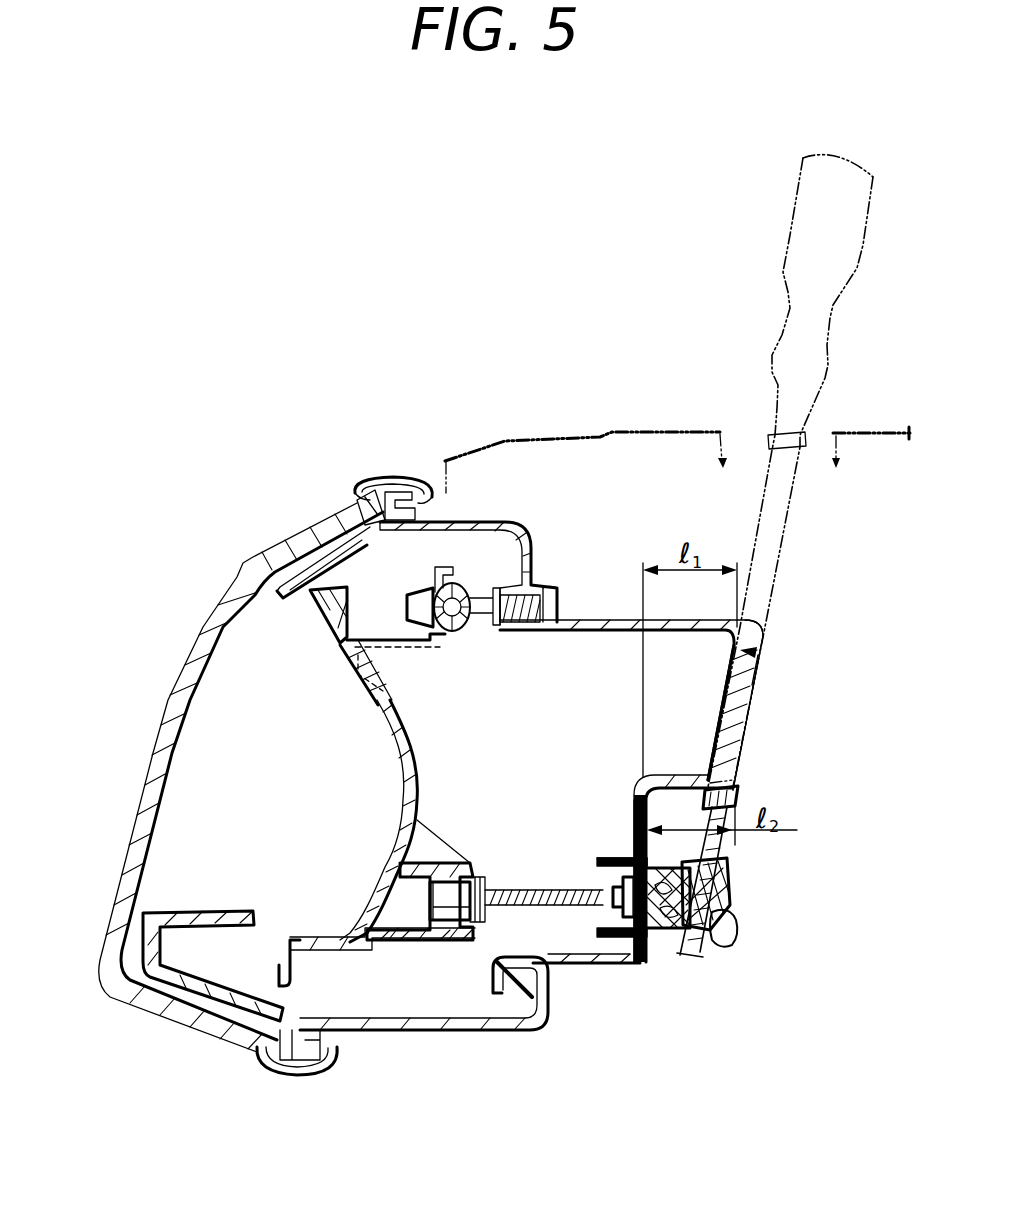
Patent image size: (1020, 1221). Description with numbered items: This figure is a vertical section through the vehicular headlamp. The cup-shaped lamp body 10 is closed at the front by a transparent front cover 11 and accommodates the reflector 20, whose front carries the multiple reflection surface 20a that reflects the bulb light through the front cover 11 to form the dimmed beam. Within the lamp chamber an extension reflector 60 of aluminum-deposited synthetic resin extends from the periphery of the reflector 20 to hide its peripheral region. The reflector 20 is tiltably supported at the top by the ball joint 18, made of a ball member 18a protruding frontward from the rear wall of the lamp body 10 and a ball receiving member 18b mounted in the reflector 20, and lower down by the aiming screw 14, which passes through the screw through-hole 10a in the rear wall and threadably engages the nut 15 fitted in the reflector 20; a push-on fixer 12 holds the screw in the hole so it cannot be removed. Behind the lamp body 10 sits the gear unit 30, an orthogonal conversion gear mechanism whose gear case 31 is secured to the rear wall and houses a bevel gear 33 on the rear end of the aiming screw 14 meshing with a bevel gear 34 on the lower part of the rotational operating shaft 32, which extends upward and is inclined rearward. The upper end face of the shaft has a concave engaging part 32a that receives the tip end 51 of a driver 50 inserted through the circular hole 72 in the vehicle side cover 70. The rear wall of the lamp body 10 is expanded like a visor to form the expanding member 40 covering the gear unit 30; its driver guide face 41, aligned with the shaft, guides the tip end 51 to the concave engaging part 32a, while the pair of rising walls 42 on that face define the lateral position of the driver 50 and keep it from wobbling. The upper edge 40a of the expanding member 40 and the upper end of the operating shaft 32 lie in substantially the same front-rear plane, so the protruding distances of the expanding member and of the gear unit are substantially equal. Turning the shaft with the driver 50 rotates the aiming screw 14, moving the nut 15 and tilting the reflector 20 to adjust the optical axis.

The lamp body 10 is at (530, 550).
The screw through-hole 10a is at (600, 880).
The front cover 11 is at (164, 710).
The push-on fixer 12 is at (620, 937).
The aiming screw 14 is at (520, 890).
The nut 15 is at (447, 900).
The ball joint 18 is at (467, 482).
The ball member 18a is at (483, 592).
The ball receiving member 18b is at (457, 588).
The reflector 20 is at (418, 757).
The multiple reflection surface 20a is at (400, 830).
The gear unit 30 is at (745, 895).
The gear case 31 is at (727, 906).
The rotational operating shaft 32 is at (762, 866).
The concave engaging part 32a is at (745, 795).
The bevel gear 33 is at (671, 937).
The bevel gear 34 is at (736, 927).
The expanding member 40 is at (791, 677).
The upper edge 40a is at (768, 630).
The driver guide face 41 is at (730, 696).
The rising walls 42 is at (760, 672).
The driver 50 is at (826, 381).
The tip end 51 is at (740, 792).
The extension reflector 60 is at (147, 927).
The vehicle side cover 70 is at (690, 432).
The circular hole 72 is at (726, 455).